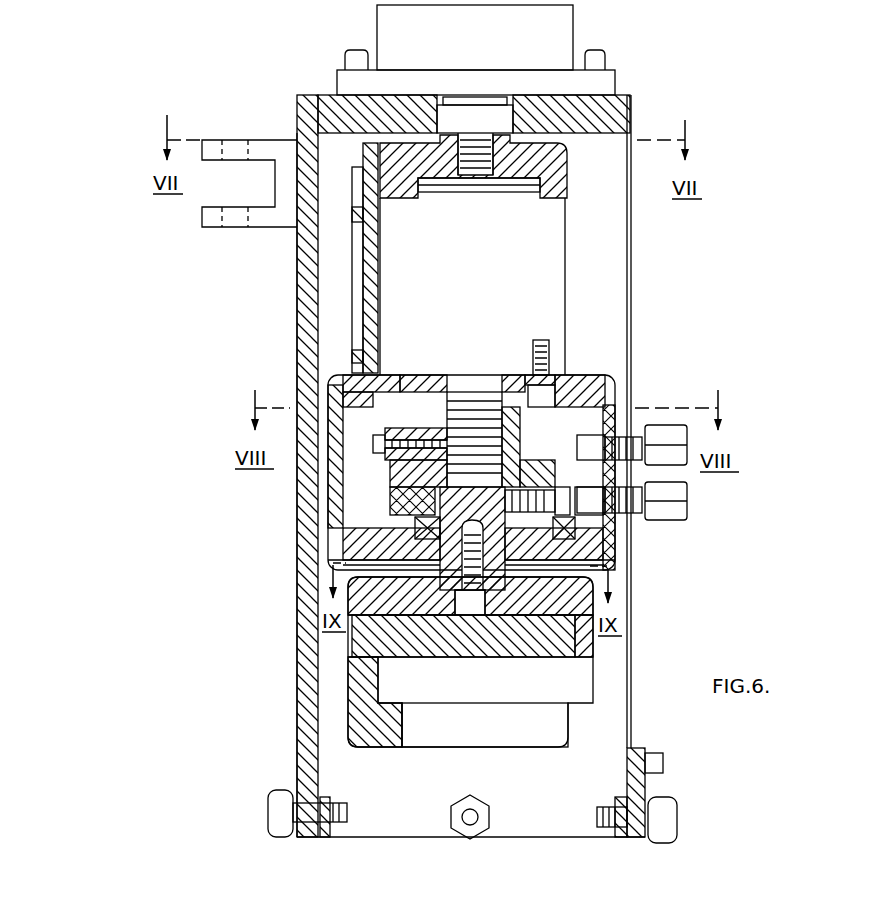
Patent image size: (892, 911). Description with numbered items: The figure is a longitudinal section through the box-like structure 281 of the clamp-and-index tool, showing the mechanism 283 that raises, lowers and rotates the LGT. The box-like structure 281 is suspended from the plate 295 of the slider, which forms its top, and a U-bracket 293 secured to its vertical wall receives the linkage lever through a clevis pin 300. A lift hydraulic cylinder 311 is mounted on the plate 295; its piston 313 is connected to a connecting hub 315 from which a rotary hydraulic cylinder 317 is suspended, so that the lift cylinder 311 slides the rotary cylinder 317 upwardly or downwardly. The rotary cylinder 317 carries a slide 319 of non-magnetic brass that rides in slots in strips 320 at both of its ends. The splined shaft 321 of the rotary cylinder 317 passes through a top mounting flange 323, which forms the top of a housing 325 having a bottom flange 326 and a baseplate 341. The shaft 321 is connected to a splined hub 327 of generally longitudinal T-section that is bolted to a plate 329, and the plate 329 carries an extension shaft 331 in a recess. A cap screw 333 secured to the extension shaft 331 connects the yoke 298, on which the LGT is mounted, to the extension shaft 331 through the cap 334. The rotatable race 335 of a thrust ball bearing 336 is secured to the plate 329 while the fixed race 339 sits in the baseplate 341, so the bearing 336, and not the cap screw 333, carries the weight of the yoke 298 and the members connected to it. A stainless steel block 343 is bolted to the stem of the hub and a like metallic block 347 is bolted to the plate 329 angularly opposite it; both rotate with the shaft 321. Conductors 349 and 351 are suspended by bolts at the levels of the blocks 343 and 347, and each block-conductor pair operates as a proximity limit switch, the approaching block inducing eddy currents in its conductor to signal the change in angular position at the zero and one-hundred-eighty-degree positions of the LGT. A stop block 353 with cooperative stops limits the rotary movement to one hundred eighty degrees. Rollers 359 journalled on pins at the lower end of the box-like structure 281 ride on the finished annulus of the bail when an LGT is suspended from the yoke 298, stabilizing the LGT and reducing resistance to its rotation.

The box-like structure 281 is at (633, 309).
The mechanism 283 is at (612, 370).
The U-bracket 293 is at (266, 140).
The plate 295 is at (612, 116).
The yoke 298 is at (390, 749).
The clevis pin 300 is at (297, 270).
The lift hydraulic cylinder 311 is at (565, 21).
The piston 313 is at (470, 110).
The connecting hub 315 is at (555, 181).
The rotary hydraulic cylinder 317 is at (540, 232).
The slide 319 is at (368, 283).
The strips 320 is at (357, 310).
The shaft 321 is at (462, 395).
The top mounting flange 323 is at (605, 386).
The housing 325 is at (328, 488).
The bottom flange 326 is at (342, 536).
The splined hub 327 is at (522, 468).
The plate 329 is at (392, 475).
The extension shaft 331 is at (348, 572).
The cap screw 333 is at (470, 605).
The cap 334 is at (580, 612).
The rotatable race 335 is at (407, 520).
The thrust ball bearing 336 is at (556, 545).
The fixed race 339 is at (338, 558).
The baseplate 341 is at (612, 560).
The metallic block 343 is at (398, 428).
The metallic block 347 is at (600, 572).
The conductor 349 is at (610, 473).
The conductor 351 is at (607, 476).
The stop block 353 is at (608, 550).
The rollers 359 is at (672, 812).